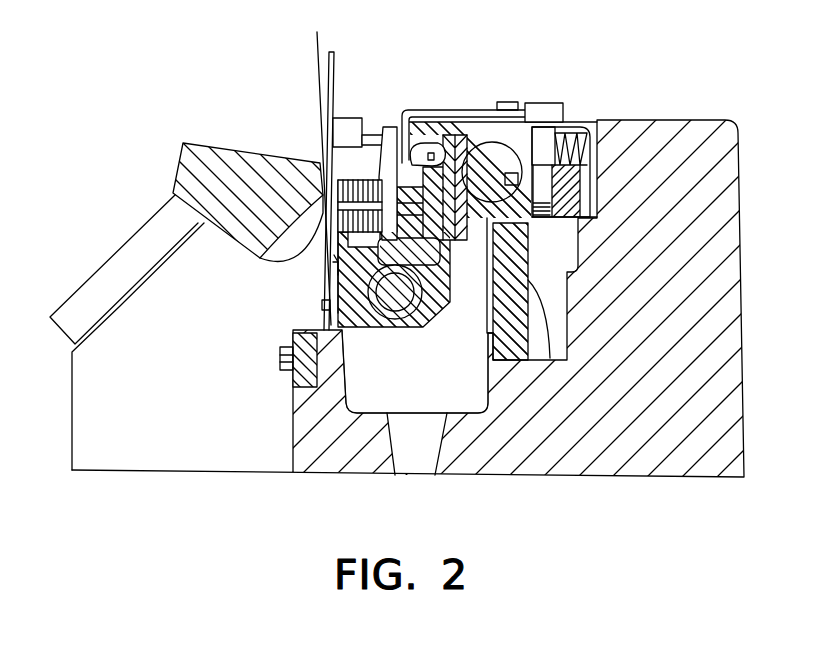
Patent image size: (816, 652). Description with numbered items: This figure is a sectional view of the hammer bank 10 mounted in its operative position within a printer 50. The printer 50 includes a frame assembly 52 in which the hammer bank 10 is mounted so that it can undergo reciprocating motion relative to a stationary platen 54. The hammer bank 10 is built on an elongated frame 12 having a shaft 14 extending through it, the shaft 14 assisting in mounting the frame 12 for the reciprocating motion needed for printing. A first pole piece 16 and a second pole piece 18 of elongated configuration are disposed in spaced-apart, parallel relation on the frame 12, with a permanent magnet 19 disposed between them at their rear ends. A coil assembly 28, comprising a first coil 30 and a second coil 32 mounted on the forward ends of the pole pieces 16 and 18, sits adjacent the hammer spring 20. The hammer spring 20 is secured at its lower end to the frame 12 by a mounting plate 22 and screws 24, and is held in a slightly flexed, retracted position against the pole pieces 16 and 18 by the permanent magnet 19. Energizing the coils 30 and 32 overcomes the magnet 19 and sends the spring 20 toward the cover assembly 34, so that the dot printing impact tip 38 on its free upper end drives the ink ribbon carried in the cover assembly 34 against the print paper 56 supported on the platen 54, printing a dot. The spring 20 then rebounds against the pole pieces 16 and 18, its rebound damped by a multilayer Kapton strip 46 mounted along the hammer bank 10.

The hammer bank 10 is at (433, 322).
The frame 12 is at (405, 330).
The shaft 14 is at (372, 333).
The first pole piece 16 is at (407, 112).
The second pole piece 18 is at (433, 232).
The permanent magnet 19 is at (439, 178).
The hammer spring 20 is at (335, 263).
The mounting plate 22 is at (322, 300).
The screws 24 is at (287, 337).
The coil assembly 28 is at (352, 176).
The first coil 30 is at (368, 122).
The second coil 32 is at (390, 127).
The cover assembly 34 is at (327, 152).
The dot printing impact tip 38 is at (322, 215).
The Kapton strip 46 is at (332, 255).
The printer 50 is at (528, 90).
The frame assembly 52 is at (732, 375).
The platen 54 is at (227, 150).
The print paper 56 is at (325, 108).